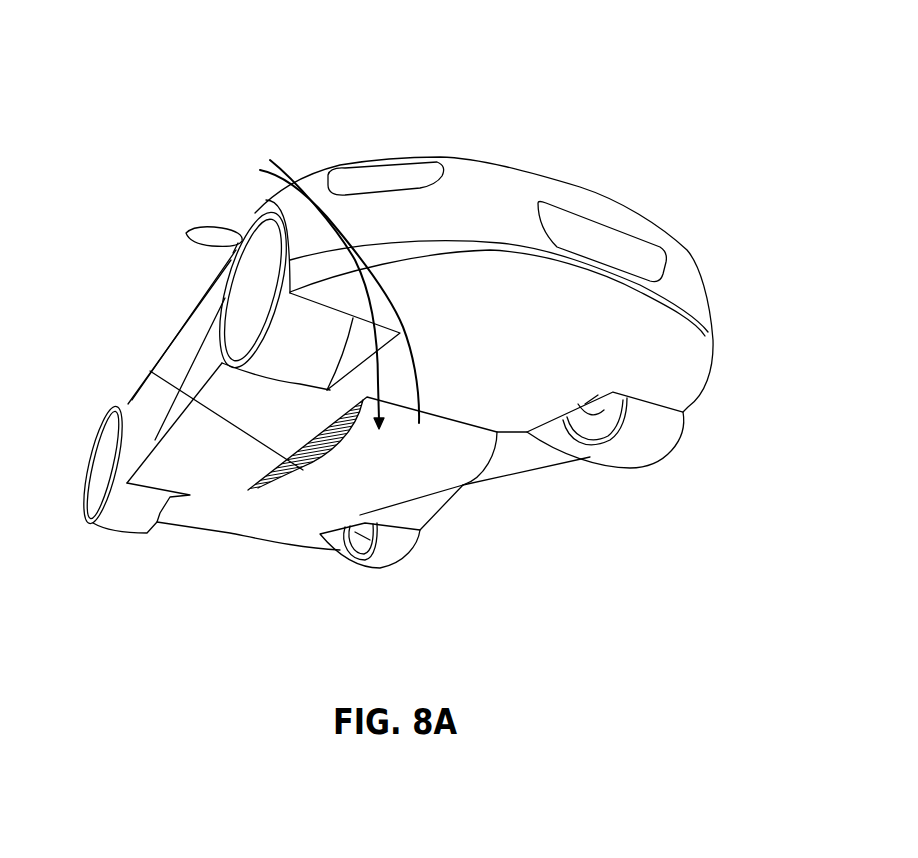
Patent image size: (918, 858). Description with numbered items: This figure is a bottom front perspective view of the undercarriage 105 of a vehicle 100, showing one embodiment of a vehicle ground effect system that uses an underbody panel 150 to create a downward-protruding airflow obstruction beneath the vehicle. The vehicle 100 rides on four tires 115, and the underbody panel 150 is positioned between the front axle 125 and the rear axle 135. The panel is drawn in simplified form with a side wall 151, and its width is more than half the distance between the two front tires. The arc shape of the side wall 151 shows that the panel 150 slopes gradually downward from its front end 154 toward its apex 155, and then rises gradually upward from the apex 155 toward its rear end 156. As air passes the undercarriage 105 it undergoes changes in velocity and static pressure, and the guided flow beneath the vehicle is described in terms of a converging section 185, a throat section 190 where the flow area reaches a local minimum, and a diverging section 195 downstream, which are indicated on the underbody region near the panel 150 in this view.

The vehicle 100 is at (260, 80).
The undercarriage 105 is at (587, 350).
The tires 115 is at (643, 443).
The front axle 125 is at (600, 408).
The rear axle 135 is at (388, 545).
The underbody panel 150 is at (265, 172).
The side wall 151 is at (283, 473).
The front end 154 is at (272, 161).
The apex 155 is at (280, 470).
The rear end 156 is at (127, 455).
The converging section 185 is at (437, 428).
The throat section 190 is at (397, 477).
The diverging section 195 is at (340, 500).